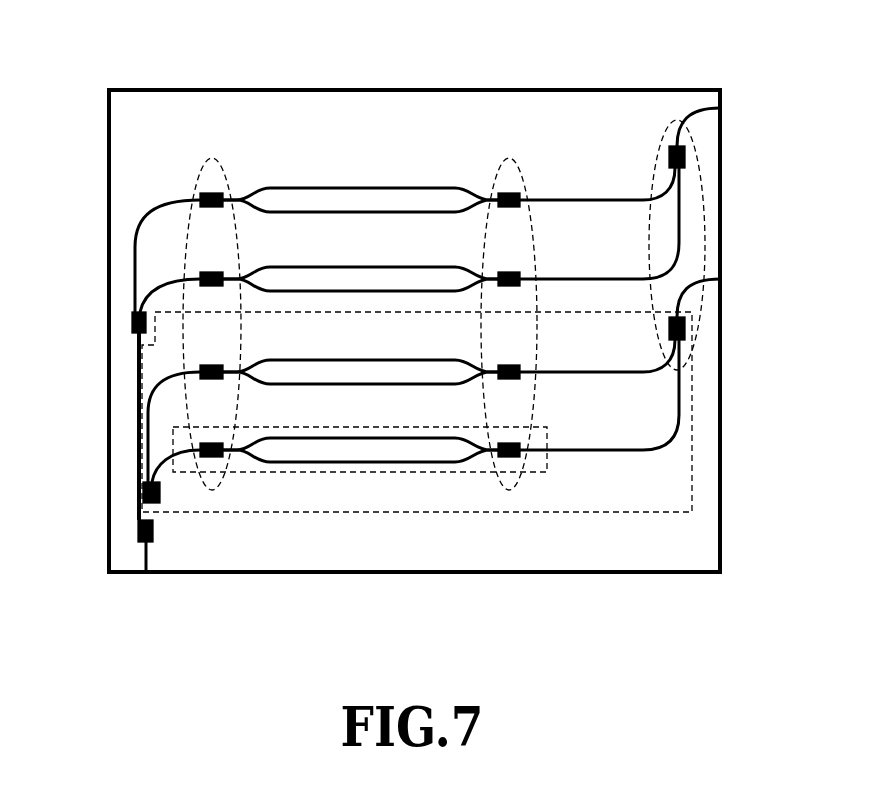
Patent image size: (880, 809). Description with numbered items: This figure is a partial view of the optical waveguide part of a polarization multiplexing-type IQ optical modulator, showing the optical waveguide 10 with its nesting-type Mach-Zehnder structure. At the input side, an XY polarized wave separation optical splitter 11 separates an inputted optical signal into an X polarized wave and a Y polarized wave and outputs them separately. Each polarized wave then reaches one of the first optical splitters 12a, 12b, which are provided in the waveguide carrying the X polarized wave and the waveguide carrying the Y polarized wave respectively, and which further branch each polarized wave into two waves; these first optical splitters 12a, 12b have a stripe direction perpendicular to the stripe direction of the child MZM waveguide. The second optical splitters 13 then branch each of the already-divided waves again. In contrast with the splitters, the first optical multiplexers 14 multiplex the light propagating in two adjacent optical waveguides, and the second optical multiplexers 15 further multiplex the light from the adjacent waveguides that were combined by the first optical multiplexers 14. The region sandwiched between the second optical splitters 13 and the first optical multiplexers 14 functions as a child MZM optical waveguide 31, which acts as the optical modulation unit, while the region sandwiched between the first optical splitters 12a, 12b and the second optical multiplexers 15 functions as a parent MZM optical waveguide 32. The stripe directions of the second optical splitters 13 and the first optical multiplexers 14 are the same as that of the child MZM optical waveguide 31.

The optical waveguide 10 is at (628, 530).
The XY polarized wave separation optical splitter 11 is at (138, 531).
The first optical splitter 12a is at (132, 322).
The first optical splitter 12b is at (143, 492).
The second optical splitters 13 is at (211, 158).
The first optical multiplexers 14 is at (508, 158).
The second optical multiplexers 15 is at (677, 120).
The child MZM optical waveguide 31 is at (340, 472).
The parent MZM optical waveguide 32 is at (575, 512).